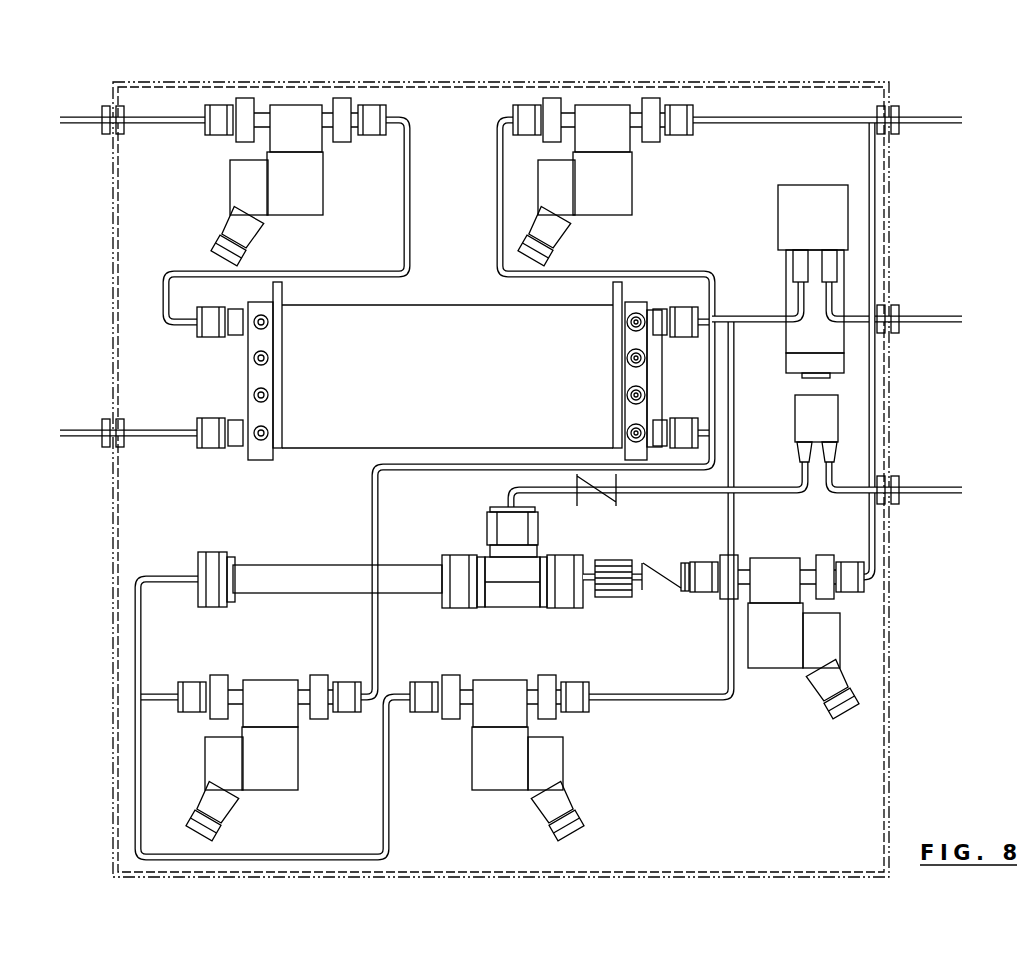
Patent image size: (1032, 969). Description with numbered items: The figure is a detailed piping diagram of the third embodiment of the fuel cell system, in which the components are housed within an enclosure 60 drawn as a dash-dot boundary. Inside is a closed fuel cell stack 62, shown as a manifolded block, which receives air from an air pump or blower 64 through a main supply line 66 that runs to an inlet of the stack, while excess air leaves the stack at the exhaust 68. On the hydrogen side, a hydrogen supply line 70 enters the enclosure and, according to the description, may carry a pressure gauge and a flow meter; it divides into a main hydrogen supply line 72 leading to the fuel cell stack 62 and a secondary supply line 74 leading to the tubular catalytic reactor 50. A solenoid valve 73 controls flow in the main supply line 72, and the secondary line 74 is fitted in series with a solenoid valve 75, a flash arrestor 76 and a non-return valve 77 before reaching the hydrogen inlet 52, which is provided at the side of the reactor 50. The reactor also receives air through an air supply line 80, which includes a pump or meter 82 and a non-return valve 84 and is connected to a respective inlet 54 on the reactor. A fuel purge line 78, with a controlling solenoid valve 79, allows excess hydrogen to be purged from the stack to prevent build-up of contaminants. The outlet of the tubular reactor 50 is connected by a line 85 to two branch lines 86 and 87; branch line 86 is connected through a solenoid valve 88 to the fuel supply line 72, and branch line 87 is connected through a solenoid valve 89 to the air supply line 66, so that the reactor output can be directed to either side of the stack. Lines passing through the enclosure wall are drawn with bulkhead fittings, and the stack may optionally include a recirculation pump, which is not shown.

The catalytic reactor 50 is at (280, 565).
The hydrogen inlet 52 is at (588, 598).
The inlet 54 is at (505, 491).
The enclosure 60 is at (705, 82).
The fuel cell stack 62 is at (450, 303).
The air pump or blower 64 is at (793, 185).
The main supply line 66 is at (718, 303).
The air exhaust 68 is at (162, 433).
The hydrogen supply line 70 is at (925, 117).
The main hydrogen supply line 72 is at (712, 436).
The solenoid valve 73 is at (605, 103).
The secondary supply line 74 is at (684, 560).
The solenoid valve 75 is at (785, 558).
The flash arrestor 76 is at (615, 597).
The non-return valve 77 is at (668, 590).
The fuel purge line 78 is at (147, 124).
The solenoid valve 79 is at (295, 103).
The air supply line 80 is at (740, 487).
The pump or meter 82 is at (840, 408).
The non-return valve 84 is at (590, 500).
The line 85 is at (150, 578).
The branch line 86 is at (142, 632).
The branch line 87 is at (143, 775).
The solenoid valve 88 is at (288, 758).
The solenoid valve 89 is at (552, 757).